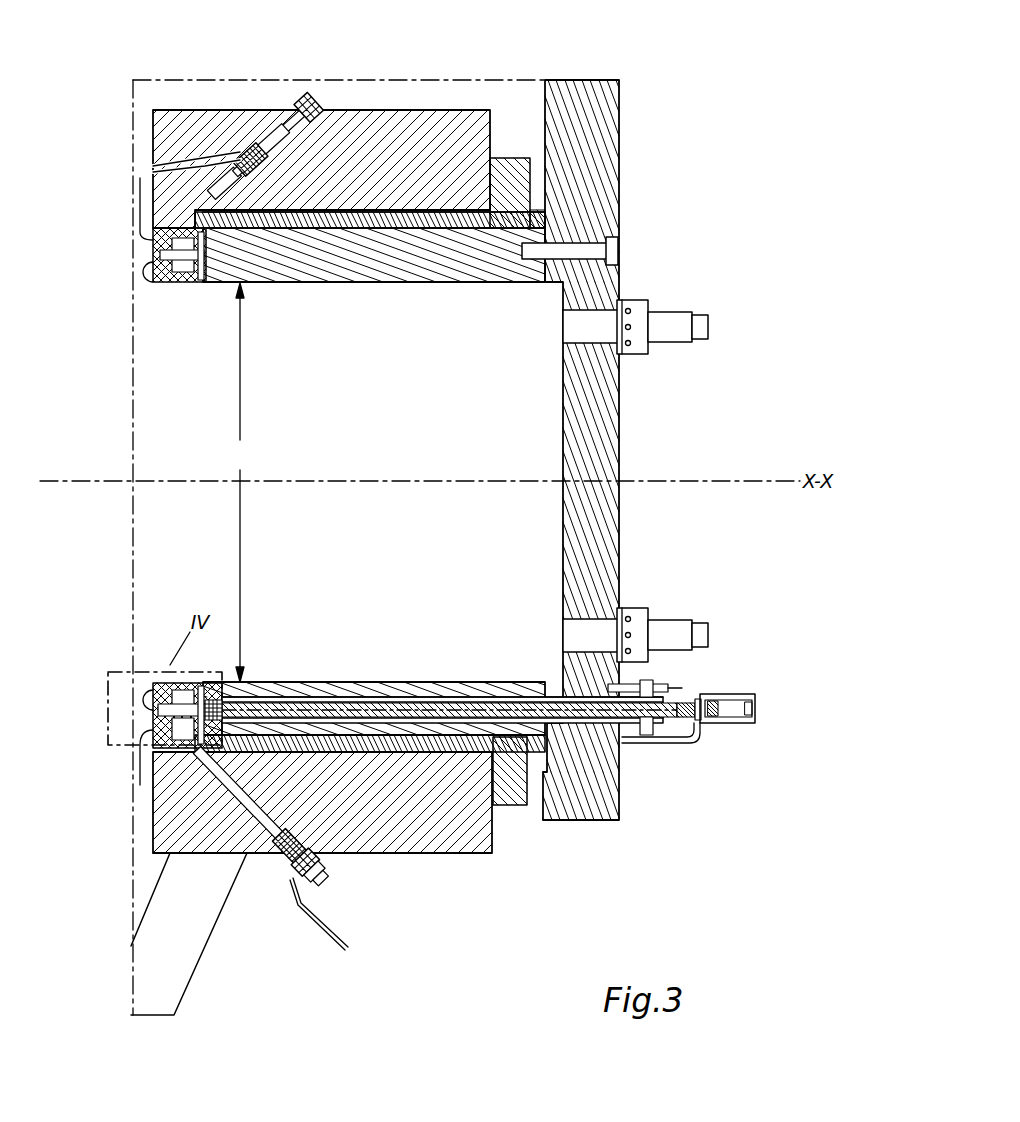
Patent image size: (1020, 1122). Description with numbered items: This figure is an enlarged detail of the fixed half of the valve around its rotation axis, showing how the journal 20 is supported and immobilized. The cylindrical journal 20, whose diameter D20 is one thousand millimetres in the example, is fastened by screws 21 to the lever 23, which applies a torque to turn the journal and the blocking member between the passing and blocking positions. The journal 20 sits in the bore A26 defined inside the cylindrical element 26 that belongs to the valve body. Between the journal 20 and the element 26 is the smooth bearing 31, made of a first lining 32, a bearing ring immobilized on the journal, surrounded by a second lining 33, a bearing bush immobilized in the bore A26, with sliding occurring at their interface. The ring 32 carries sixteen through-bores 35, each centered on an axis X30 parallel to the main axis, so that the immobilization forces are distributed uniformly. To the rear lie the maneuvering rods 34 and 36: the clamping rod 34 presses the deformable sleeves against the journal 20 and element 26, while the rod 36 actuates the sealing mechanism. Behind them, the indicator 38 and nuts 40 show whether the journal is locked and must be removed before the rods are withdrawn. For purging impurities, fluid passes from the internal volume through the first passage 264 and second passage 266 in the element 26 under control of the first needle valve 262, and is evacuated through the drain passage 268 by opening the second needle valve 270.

The journal 20 is at (406, 481).
The screws 21 is at (667, 320).
The lever 23 is at (598, 798).
The cylindrical element 26 is at (422, 833).
The bore A26 is at (325, 213).
The diameter of the journal D20 is at (240, 482).
The smooth bearing 31 is at (350, 590).
The first lining 32 is at (387, 690).
The second lining 33 is at (240, 703).
The maneuvering rod 34 is at (452, 698).
The through-bores 35 is at (292, 732).
The maneuvering rod 36 is at (430, 707).
The indicator 38 is at (748, 727).
The nuts 40 is at (655, 680).
The axis of the through-bores X30 is at (757, 708).
The first needle valve 262 is at (303, 120).
The first passage 264 is at (192, 150).
The second passage 266 is at (207, 165).
The drain passage 268 is at (215, 782).
The second needle valve 270 is at (330, 876).